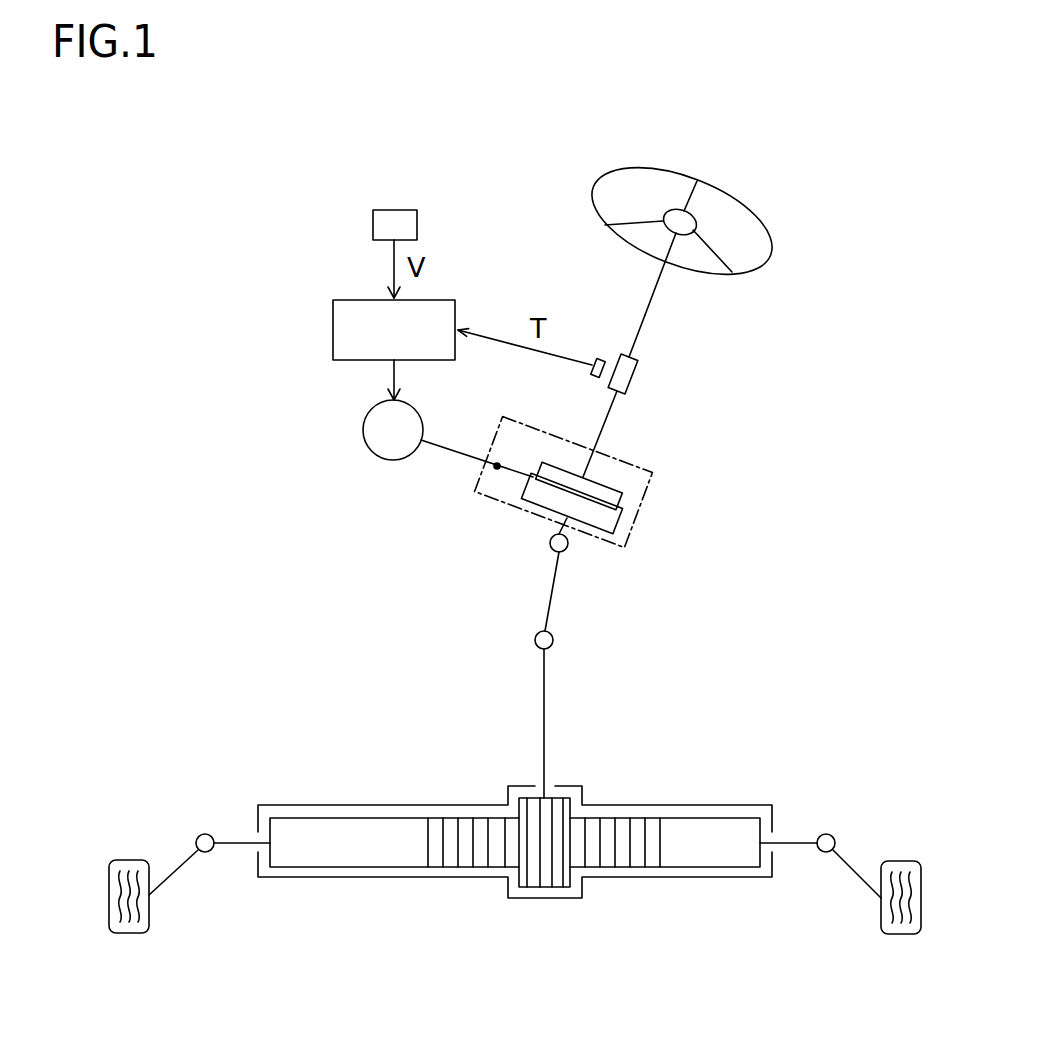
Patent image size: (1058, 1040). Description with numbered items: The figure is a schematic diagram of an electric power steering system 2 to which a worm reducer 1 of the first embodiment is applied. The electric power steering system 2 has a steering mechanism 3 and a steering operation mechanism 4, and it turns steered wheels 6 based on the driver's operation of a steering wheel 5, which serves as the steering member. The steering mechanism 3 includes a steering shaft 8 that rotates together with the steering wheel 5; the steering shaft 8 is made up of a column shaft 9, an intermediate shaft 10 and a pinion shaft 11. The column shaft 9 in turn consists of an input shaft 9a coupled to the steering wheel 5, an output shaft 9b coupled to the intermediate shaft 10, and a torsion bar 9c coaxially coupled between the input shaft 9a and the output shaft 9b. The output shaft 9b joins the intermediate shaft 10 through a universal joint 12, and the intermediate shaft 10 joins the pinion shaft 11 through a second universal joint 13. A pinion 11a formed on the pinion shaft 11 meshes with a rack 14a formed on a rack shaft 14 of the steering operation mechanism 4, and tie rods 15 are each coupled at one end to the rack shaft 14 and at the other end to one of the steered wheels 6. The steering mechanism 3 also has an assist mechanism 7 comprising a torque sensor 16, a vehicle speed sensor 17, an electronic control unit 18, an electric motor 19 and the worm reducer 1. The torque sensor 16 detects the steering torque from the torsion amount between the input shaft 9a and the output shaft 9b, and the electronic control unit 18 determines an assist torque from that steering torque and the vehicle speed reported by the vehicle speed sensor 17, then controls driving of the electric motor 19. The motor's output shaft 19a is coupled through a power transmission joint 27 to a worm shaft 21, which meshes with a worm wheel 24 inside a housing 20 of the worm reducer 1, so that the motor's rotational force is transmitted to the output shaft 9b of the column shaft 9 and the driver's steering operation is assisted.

The worm reducer 1 is at (643, 541).
The electric power steering system 2 is at (752, 165).
The steering mechanism 3 is at (789, 221).
The steering operation mechanism 4 is at (584, 904).
The steering wheel 5 is at (645, 169).
The steered wheels 6 is at (127, 934).
The assist mechanism 7 is at (352, 410).
The steering shaft 8 is at (657, 293).
The column shaft 9 is at (709, 342).
The input shaft 9a is at (637, 343).
The output shaft 9b is at (615, 406).
The torsion bar 9c is at (634, 377).
The intermediate shaft 10 is at (554, 599).
The pinion shaft 11 is at (549, 738).
The pinion 11a is at (543, 887).
The universal joint 12 is at (568, 546).
The universal joint 13 is at (554, 641).
The rack shaft 14 is at (624, 870).
The rack 14a is at (485, 862).
The tie rods 15 is at (178, 873).
The torque sensor 16 is at (601, 358).
The vehicle speed sensor 17 is at (373, 222).
The electronic control unit (ECU) 18 is at (333, 328).
The electric motor 19 is at (385, 461).
The output shaft of the electric motor 19a is at (452, 453).
The housing 20 is at (643, 468).
The worm shaft 21 is at (618, 513).
The worm wheel 24 is at (606, 481).
The power transmission joint 27 is at (510, 478).